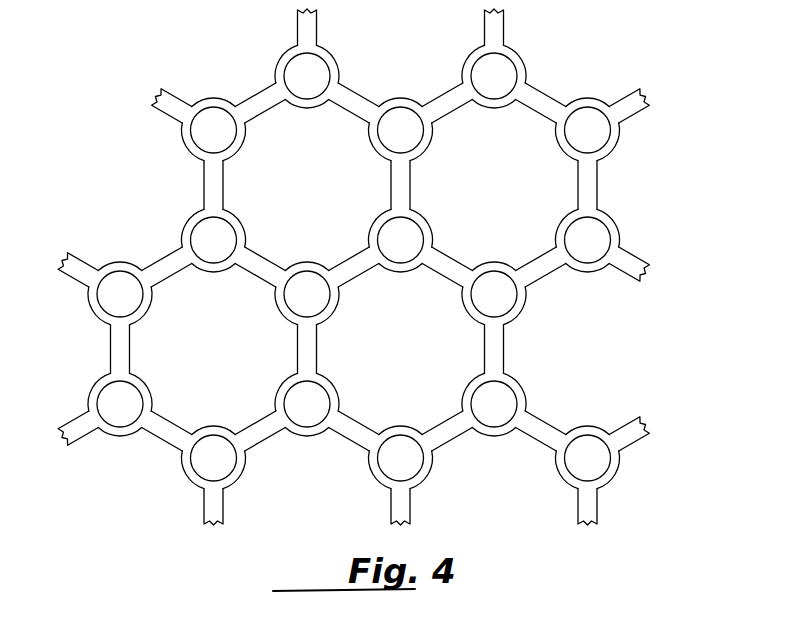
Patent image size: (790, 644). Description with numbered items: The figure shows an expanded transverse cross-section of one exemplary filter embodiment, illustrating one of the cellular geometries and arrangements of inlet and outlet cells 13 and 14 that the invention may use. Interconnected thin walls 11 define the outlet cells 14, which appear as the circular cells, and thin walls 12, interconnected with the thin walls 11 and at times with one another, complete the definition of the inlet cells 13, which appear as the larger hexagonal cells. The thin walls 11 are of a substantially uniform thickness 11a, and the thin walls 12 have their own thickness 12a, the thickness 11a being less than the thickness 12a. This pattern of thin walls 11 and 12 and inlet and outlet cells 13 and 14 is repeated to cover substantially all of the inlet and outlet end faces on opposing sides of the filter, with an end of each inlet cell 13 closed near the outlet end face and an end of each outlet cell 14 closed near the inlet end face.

The thin walls 11 is at (182, 463).
The thickness of thin walls 11 11a is at (308, 79).
The thin walls 12 is at (212, 185).
The thickness of thin walls 12 12a is at (523, 137).
The inlet cells 13 is at (328, 193).
The outlet cells 14 is at (600, 141).